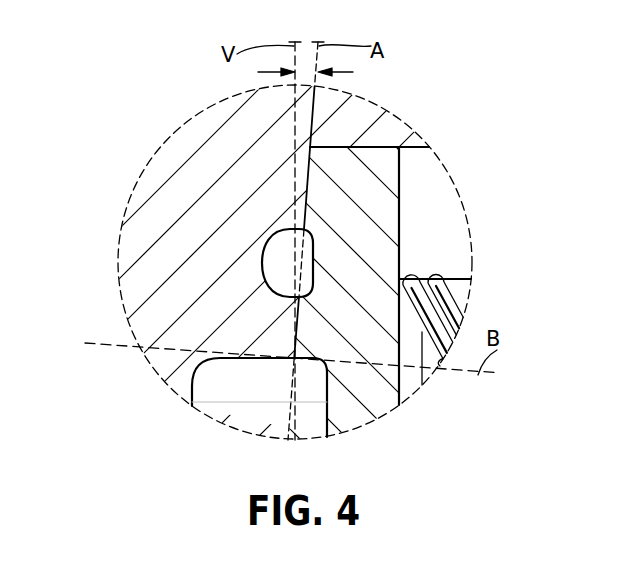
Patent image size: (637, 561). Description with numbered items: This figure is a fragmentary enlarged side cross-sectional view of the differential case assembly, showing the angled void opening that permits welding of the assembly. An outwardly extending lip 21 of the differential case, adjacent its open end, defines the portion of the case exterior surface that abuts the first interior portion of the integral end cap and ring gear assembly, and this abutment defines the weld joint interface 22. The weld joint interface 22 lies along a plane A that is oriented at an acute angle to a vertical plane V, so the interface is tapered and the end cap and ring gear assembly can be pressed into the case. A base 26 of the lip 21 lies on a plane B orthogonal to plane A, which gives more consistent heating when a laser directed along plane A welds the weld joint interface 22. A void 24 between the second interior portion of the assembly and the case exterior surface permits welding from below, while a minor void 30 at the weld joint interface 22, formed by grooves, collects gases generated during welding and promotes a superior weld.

The outwardly extending lip 21 is at (367, 146).
The weld joint interface 22 is at (312, 175).
The void 24 is at (233, 410).
The base 26 is at (308, 364).
The minor void 30 is at (262, 258).